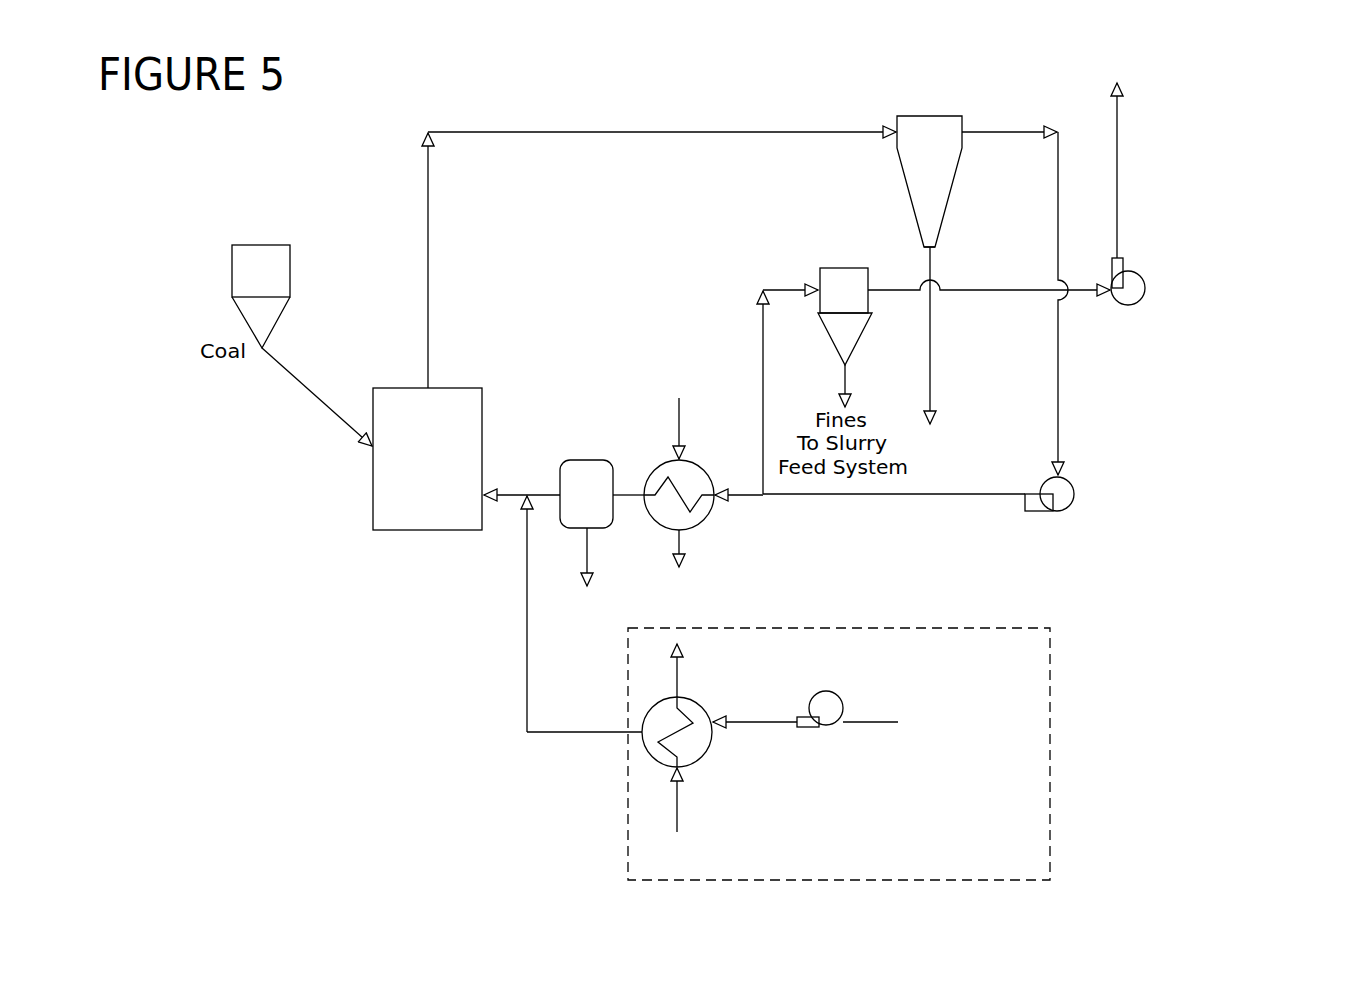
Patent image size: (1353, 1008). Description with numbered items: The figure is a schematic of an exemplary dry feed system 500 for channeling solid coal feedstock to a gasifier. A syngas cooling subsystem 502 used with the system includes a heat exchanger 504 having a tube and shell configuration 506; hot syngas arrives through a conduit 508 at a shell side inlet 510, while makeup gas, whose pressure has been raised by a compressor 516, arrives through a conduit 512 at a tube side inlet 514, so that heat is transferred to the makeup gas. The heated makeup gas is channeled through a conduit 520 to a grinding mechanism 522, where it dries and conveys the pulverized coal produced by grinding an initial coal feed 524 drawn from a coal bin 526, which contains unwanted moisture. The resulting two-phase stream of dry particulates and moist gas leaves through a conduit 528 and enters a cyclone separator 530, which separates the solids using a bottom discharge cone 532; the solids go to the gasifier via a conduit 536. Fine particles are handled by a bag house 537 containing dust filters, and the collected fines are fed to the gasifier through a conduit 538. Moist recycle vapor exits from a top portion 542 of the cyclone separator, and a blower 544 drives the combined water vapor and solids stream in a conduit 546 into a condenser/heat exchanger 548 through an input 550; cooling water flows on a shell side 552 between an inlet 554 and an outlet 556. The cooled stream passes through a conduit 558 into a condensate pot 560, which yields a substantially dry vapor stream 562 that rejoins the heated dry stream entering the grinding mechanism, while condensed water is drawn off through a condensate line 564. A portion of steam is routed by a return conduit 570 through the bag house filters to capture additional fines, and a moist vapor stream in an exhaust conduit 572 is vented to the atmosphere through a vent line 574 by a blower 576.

The dry feed system 500 is at (420, 640).
The syngas cooling subsystem 502 is at (935, 628).
The heat exchanger 504 is at (652, 755).
The tube and shell configuration 506 is at (705, 735).
The conduit 508 is at (679, 802).
The shell side inlet 510 is at (674, 768).
The conduit 512 is at (880, 722).
The tube side inlet 514 is at (712, 718).
The compressor 516 is at (826, 727).
The conduit 520 is at (527, 695).
The grinding mechanism 522 is at (373, 514).
The coal feed 524 is at (297, 378).
The coal bin 526 is at (232, 262).
The conduit 528 is at (428, 195).
The cyclone separator 530 is at (928, 172).
The bottom discharge cone 532 is at (920, 252).
The conduit 536 is at (932, 340).
The bag house 537 is at (842, 280).
The conduit 538 is at (846, 376).
The top portion 542 is at (975, 124).
The blower 544 is at (1070, 480).
The conduit 546 is at (1008, 128).
The condenser/heat exchanger 548 is at (710, 511).
The input 550 is at (748, 492).
The shell side 552 is at (660, 478).
The inlet 554 is at (681, 400).
The outlet 556 is at (681, 545).
The conduit 558 is at (626, 499).
The condensate pot 560 is at (568, 460).
The dry vapor stream 562 is at (516, 492).
The condensate line 564 is at (587, 552).
The return conduit 570 is at (762, 320).
The exhaust conduit 572 is at (1035, 288).
The vent line 574 is at (1117, 160).
The blower 576 is at (1142, 299).